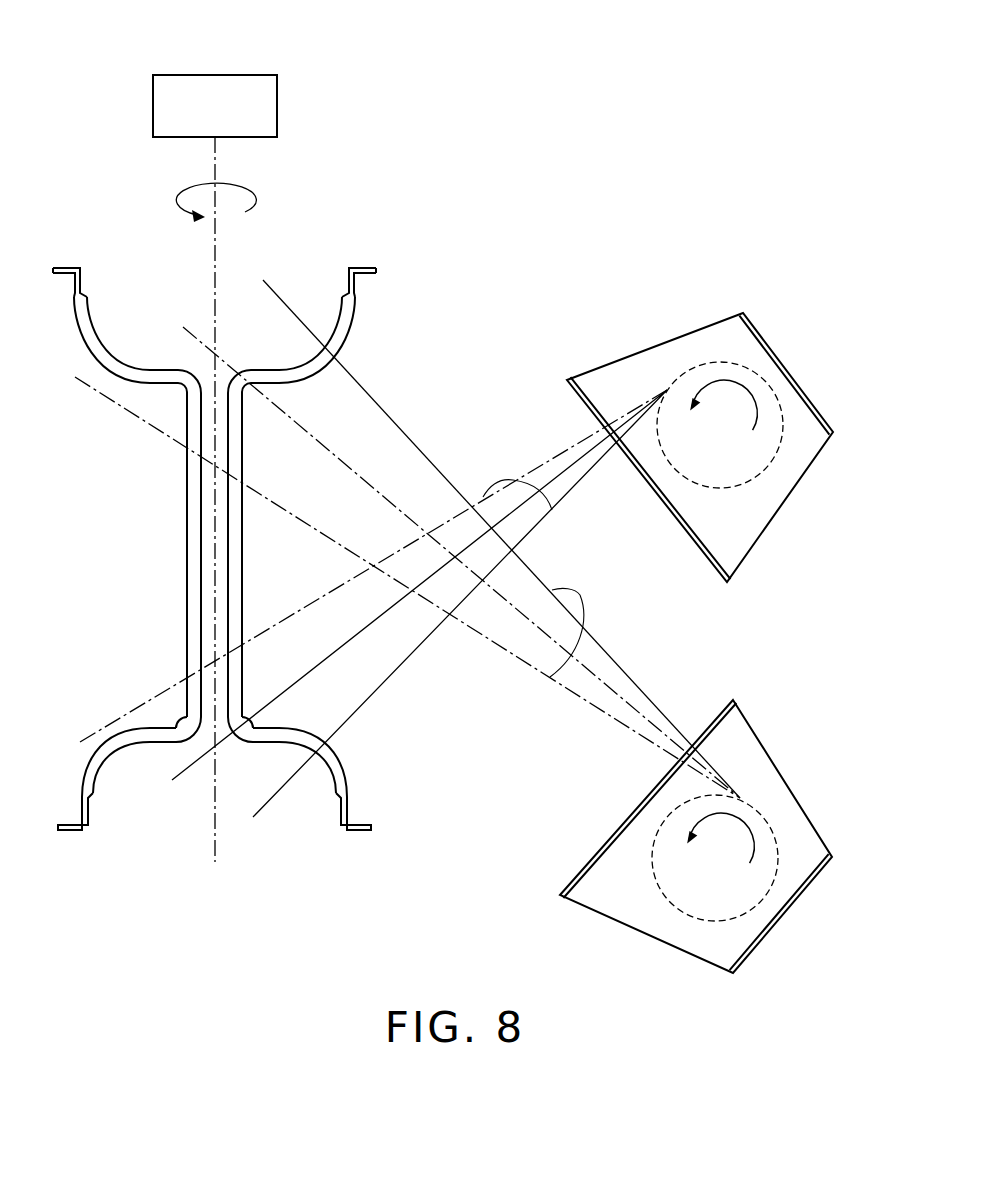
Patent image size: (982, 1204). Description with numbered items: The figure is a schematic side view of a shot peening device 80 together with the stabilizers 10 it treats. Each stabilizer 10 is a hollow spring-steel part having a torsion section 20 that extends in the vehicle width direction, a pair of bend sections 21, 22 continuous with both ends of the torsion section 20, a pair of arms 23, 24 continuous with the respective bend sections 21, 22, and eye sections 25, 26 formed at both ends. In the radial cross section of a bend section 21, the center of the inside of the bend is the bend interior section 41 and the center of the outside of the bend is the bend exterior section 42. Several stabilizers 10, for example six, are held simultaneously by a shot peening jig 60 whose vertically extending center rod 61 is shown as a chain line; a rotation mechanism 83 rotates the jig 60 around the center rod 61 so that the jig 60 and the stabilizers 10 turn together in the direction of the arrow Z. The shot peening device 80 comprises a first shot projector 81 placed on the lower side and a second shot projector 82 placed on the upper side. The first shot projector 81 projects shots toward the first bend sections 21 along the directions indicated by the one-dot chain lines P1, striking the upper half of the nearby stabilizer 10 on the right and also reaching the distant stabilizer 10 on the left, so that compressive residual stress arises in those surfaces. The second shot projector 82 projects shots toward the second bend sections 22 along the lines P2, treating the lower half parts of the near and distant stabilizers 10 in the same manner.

The stabilizer 10 is at (215, 549).
The torsion section 20 is at (187, 597).
The bend section 21 is at (200, 388).
The bend section 22 is at (187, 730).
The arm 23 is at (92, 340).
The arm 24 is at (90, 763).
The eye section 25 is at (76, 268).
The eye section 26 is at (80, 830).
The bend interior section 41 is at (177, 392).
The bend exterior section 42 is at (194, 376).
The shot peening jig 60 is at (225, 862).
The center rod 61 is at (220, 253).
The shot peening device 80 is at (699, 602).
The first shot projector 81 is at (630, 928).
The second shot projector 82 is at (678, 337).
The rotation mechanism 83 is at (220, 75).
The arrow indicating rotation direction Z is at (178, 200).
The one-dot chain lines representing projection direction P1 is at (582, 597).
The one-dot chain lines representing projection direction P2 is at (513, 480).